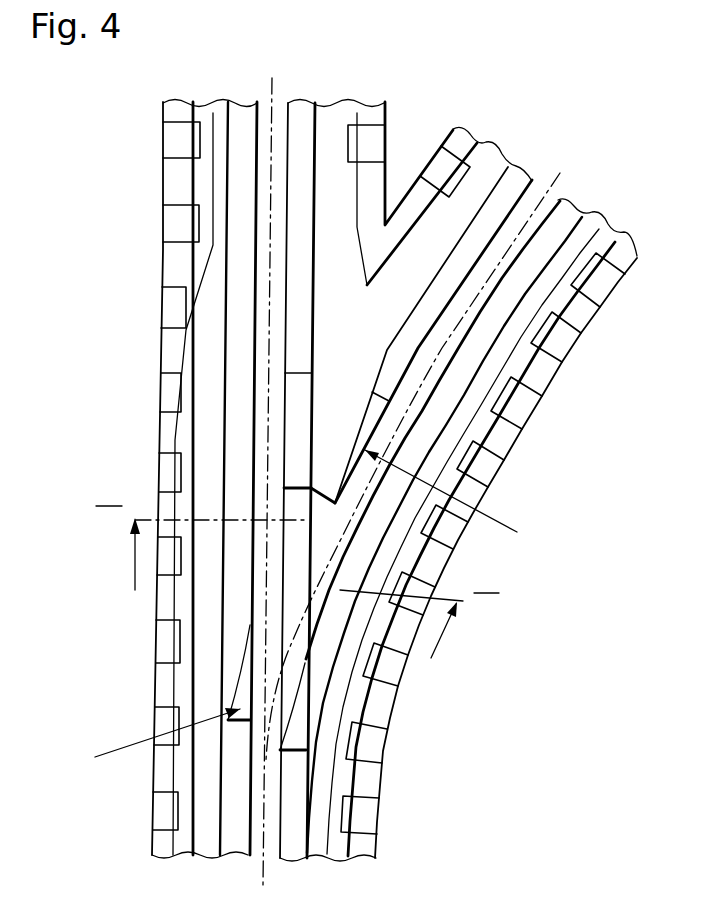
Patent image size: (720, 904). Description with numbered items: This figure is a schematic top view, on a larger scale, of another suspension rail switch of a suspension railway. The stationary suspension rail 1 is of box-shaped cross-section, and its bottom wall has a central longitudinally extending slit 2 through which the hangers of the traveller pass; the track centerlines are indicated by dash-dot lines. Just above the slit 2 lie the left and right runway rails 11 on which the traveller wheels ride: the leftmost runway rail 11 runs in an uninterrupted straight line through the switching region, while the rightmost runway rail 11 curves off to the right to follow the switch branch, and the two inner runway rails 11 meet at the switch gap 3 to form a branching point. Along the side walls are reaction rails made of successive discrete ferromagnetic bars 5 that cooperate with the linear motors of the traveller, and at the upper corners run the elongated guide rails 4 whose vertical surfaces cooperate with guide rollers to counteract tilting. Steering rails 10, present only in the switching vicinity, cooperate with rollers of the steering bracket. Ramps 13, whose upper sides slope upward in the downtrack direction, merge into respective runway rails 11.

The suspension rail 1 is at (130, 235).
The slit 2 is at (297, 127).
The switch gap 3 is at (310, 522).
The guide rail 4 is at (390, 113).
The ferromagnetic bar 5 is at (177, 553).
The steering rail 10 is at (190, 705).
The runway rail 11 is at (300, 115).
The ramp 13 is at (297, 453).